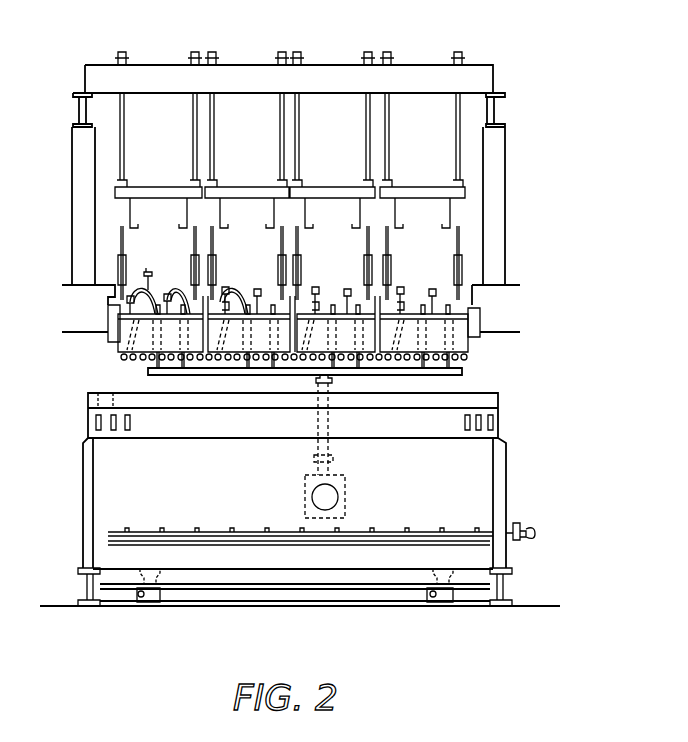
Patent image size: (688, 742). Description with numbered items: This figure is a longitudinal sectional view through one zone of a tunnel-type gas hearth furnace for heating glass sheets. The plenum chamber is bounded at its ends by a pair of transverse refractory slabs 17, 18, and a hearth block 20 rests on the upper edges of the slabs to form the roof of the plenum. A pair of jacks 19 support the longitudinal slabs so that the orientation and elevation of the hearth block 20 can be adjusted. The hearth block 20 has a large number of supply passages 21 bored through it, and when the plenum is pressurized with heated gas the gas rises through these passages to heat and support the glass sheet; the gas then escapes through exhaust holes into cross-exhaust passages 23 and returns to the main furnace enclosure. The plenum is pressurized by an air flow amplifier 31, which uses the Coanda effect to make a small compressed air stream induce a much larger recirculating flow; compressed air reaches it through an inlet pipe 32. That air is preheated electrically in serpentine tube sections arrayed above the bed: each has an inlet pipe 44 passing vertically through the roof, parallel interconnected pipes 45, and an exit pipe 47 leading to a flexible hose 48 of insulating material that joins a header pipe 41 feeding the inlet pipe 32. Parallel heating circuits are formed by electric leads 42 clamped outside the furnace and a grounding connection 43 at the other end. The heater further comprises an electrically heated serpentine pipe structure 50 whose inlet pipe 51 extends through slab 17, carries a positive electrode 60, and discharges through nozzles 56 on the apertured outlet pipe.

The transverse refractory slab 17 is at (95, 488).
The transverse refractory slab 18 is at (507, 470).
The jacks 19 is at (145, 607).
The hearth block 20 is at (205, 441).
The supply passages 21 is at (100, 401).
The cross-exhaust passages 23 is at (100, 423).
The air flow amplifier 31 is at (305, 495).
The inlet pipe 32 is at (332, 457).
The header pipe 41 is at (470, 373).
The electric leads 42 is at (147, 274).
The grounding connection 43 is at (128, 300).
The inlet pipe 44 is at (137, 290).
The parallel interconnected pipes 45 is at (148, 359).
The exit pipe 47 is at (127, 342).
The flexible hose 48 is at (177, 297).
The serpentine pipe structure 50 is at (394, 526).
The inlet pipe 51 is at (527, 541).
The nozzles 56 is at (473, 530).
The positive electrode 60 is at (520, 523).